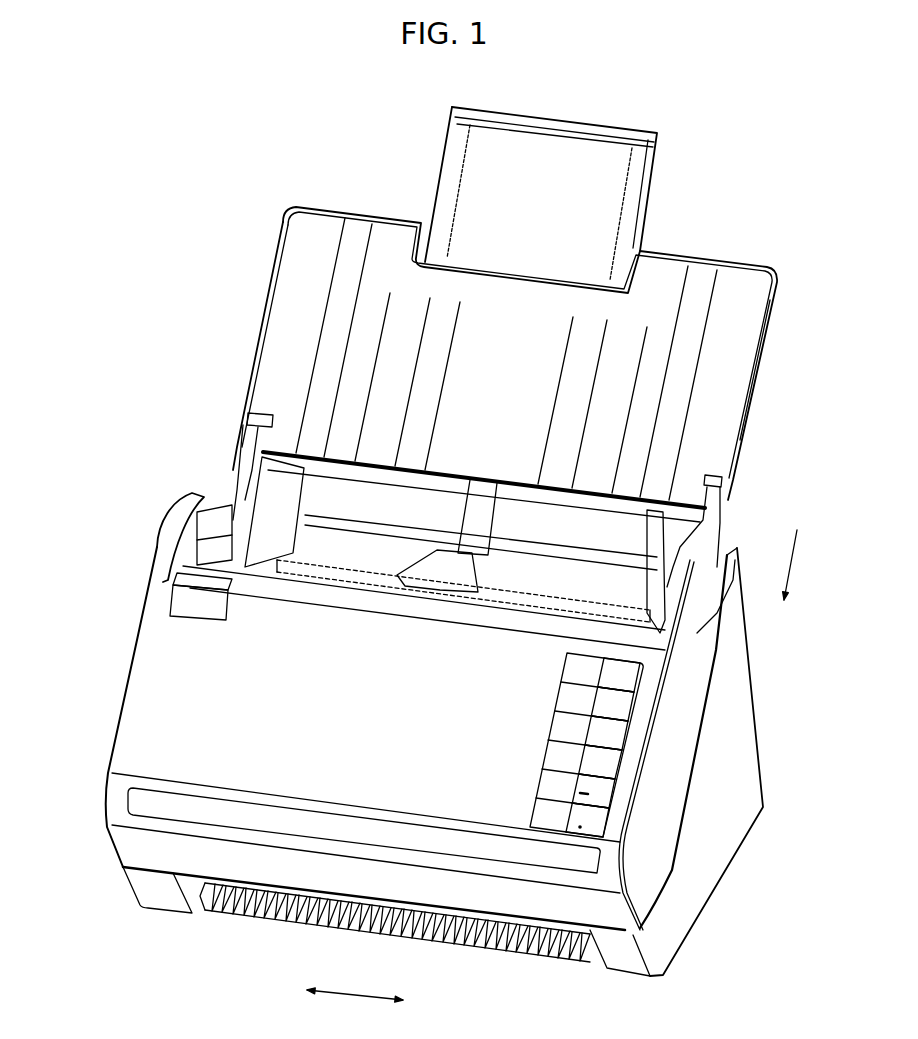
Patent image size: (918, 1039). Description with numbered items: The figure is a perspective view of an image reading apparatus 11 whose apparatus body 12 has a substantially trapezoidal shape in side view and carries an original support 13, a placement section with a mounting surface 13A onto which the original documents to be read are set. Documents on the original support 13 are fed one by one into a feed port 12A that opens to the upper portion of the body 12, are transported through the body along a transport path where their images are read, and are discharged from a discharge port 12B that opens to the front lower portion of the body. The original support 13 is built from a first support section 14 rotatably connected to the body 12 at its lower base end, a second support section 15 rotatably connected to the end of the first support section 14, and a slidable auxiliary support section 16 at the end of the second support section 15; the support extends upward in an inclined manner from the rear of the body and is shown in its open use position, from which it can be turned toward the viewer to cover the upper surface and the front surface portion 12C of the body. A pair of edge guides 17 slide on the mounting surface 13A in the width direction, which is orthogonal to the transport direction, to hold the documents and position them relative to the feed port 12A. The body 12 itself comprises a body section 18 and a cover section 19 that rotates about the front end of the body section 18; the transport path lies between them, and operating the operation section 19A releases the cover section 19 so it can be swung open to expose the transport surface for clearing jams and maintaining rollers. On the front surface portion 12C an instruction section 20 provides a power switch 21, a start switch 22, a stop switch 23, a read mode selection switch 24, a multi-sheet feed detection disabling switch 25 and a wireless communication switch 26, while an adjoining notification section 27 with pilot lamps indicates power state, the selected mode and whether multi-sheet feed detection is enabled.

The image reading apparatus 11 is at (241, 183).
The apparatus body 12 is at (150, 564).
The feed port 12A is at (333, 575).
The discharge port 12B is at (406, 932).
The front surface portion 12C is at (158, 716).
The original support 13 is at (744, 256).
The mounting surface 13A is at (392, 238).
The first support section 14 is at (510, 495).
The second support section 15 is at (759, 376).
The auxiliary support section 16 is at (650, 191).
The edge guides 17 is at (238, 489).
The body section 18 is at (738, 797).
The cover section 19 is at (141, 614).
The operation section 19A is at (194, 606).
The instruction section 20 is at (577, 838).
The power switch 21 is at (636, 675).
The start switch 22 is at (590, 815).
The stop switch 23 is at (594, 787).
The read mode selection switch 24 is at (603, 758).
The multi-sheet feed detection disabling switch 25 is at (612, 730).
The wireless communication switch 26 is at (630, 703).
The notification section 27 is at (555, 722).